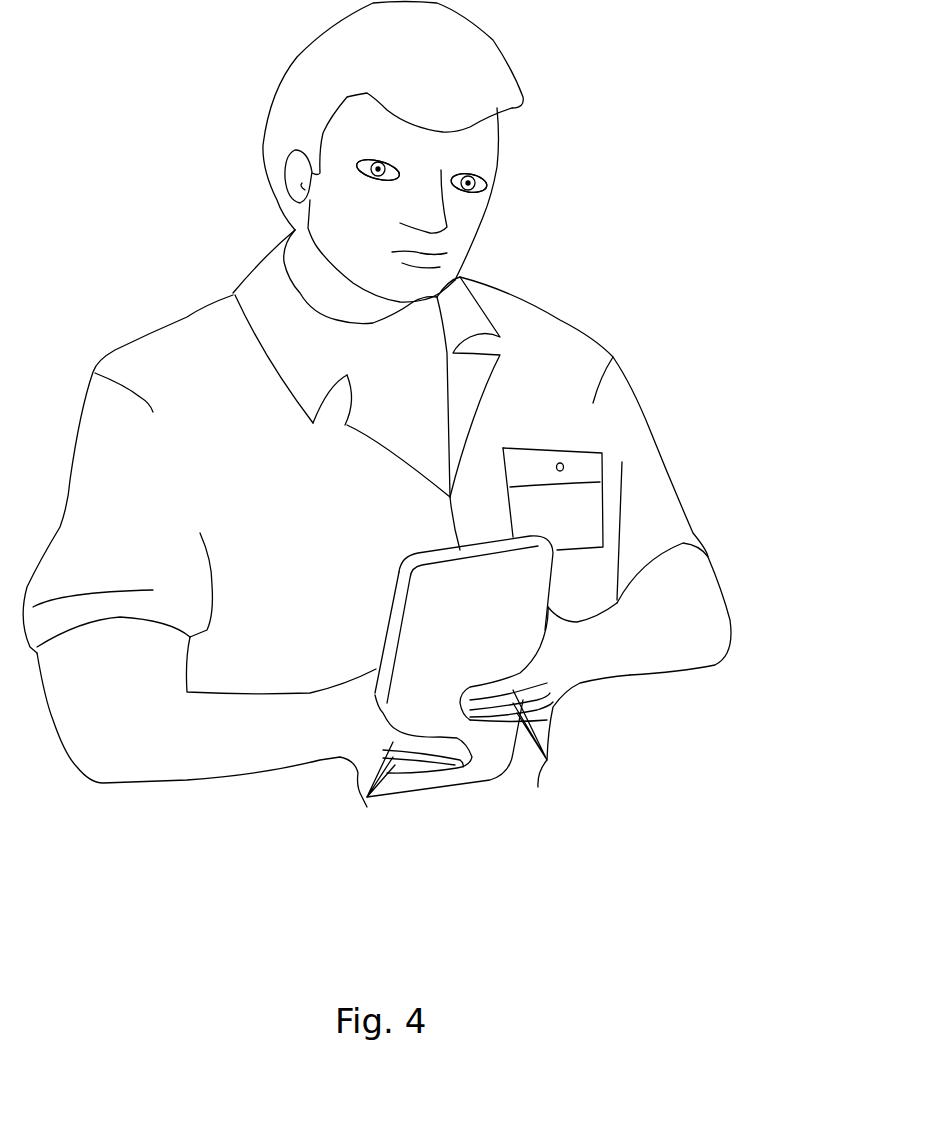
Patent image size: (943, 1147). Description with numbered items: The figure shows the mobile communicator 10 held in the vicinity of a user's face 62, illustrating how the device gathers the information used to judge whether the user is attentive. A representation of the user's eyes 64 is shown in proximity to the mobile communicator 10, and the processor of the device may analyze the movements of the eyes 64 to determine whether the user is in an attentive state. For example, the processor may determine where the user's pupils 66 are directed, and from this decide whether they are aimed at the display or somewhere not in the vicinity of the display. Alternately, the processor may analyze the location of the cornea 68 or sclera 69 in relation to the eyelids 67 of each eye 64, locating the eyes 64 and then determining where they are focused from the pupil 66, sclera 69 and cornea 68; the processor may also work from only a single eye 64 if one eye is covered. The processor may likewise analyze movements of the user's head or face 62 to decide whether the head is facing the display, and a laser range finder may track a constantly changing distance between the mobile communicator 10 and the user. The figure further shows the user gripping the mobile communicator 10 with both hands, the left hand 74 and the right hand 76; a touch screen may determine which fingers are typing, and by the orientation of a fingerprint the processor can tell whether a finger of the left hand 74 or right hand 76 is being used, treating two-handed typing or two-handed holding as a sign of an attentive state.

The mobile communicator 10 is at (483, 777).
The face 62 is at (463, 247).
The eyes 64 is at (365, 145).
The pupils 66 is at (490, 183).
The eyelids 67 is at (357, 173).
The cornea 68 is at (357, 163).
The sclera 69 is at (487, 183).
The left hand 74 is at (538, 787).
The right hand 76 is at (367, 807).